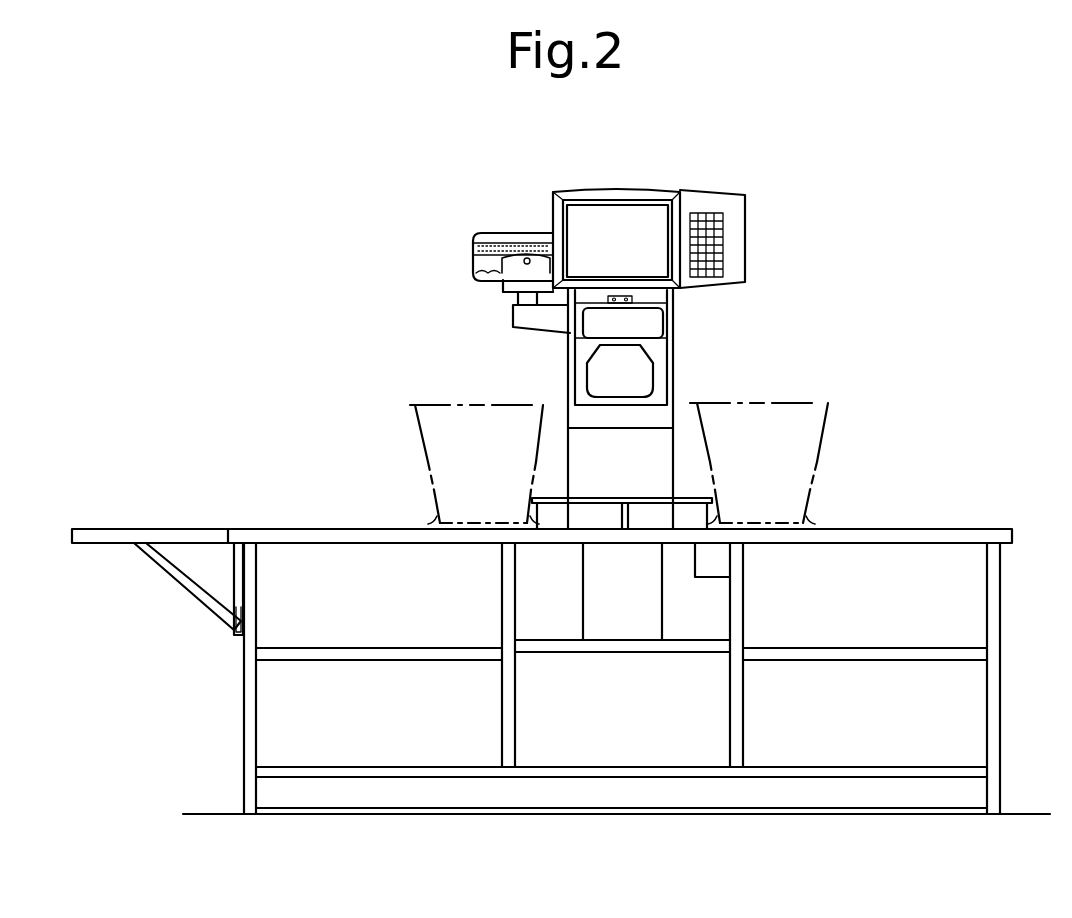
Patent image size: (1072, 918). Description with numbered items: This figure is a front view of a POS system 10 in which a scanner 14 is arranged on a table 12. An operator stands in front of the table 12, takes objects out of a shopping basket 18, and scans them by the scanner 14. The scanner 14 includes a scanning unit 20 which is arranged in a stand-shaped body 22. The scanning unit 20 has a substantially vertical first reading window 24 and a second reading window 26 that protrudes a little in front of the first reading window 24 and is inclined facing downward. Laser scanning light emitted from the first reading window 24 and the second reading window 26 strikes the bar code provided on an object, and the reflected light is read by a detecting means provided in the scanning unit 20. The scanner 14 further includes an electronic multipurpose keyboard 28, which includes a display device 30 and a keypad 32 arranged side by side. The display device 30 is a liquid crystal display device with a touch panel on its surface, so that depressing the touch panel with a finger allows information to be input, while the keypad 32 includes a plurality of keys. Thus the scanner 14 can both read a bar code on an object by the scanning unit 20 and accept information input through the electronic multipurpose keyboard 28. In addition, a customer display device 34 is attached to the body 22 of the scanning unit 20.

The POS system 10 is at (938, 260).
The table 12 is at (968, 528).
The scanner 14 is at (541, 200).
The shopping basket 18 is at (447, 465).
The scanning unit 20 is at (583, 352).
The stand-shaped body 22 is at (568, 338).
The first reading window 24 is at (640, 372).
The second reading window 26 is at (652, 322).
The electronic multipurpose keyboard 28 is at (672, 192).
The display device 30 is at (630, 212).
The keypad 32 is at (738, 212).
The customer display device 34 is at (494, 243).